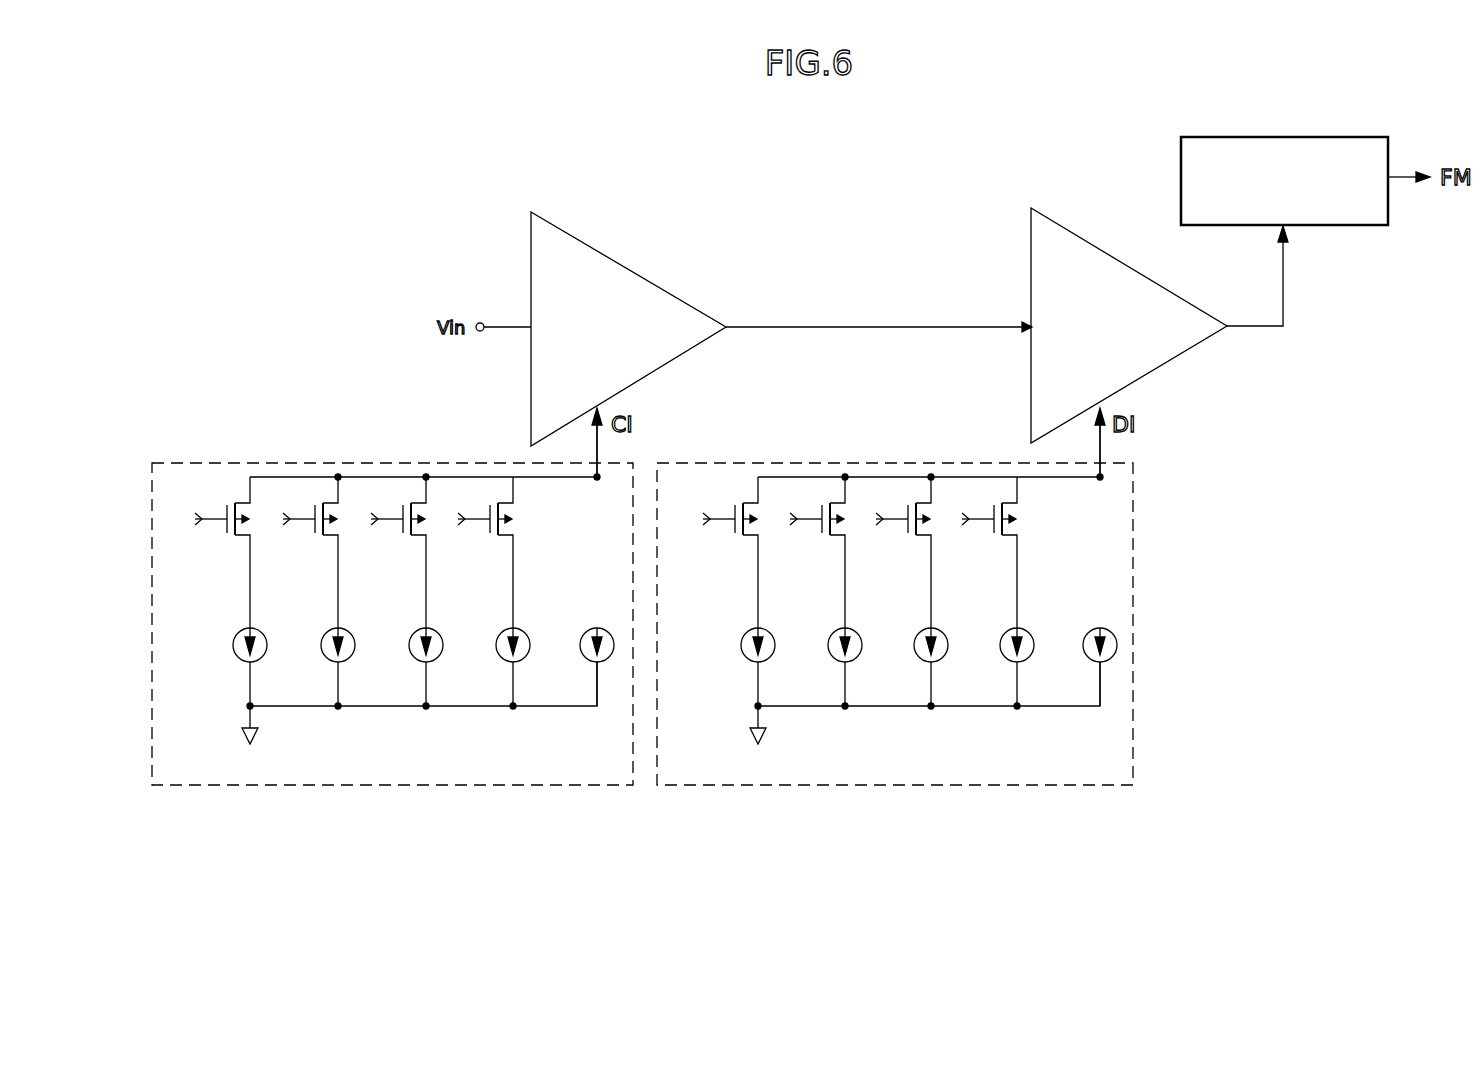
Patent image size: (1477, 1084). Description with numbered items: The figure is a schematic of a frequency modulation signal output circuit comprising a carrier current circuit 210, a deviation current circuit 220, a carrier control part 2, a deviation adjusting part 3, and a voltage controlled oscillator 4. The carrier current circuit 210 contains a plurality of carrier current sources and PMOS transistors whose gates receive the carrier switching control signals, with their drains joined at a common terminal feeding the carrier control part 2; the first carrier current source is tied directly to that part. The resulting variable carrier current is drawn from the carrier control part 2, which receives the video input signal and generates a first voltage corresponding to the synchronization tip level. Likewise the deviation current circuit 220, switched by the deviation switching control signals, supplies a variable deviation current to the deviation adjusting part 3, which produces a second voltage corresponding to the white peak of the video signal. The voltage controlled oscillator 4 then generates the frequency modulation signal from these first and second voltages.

The carrier control part 2 is at (632, 267).
The deviation adjusting part 3 is at (1108, 253).
The voltage controlled oscillator 4 is at (1337, 137).
The carrier current circuit 210 is at (374, 786).
The deviation current circuit 220 is at (759, 786).